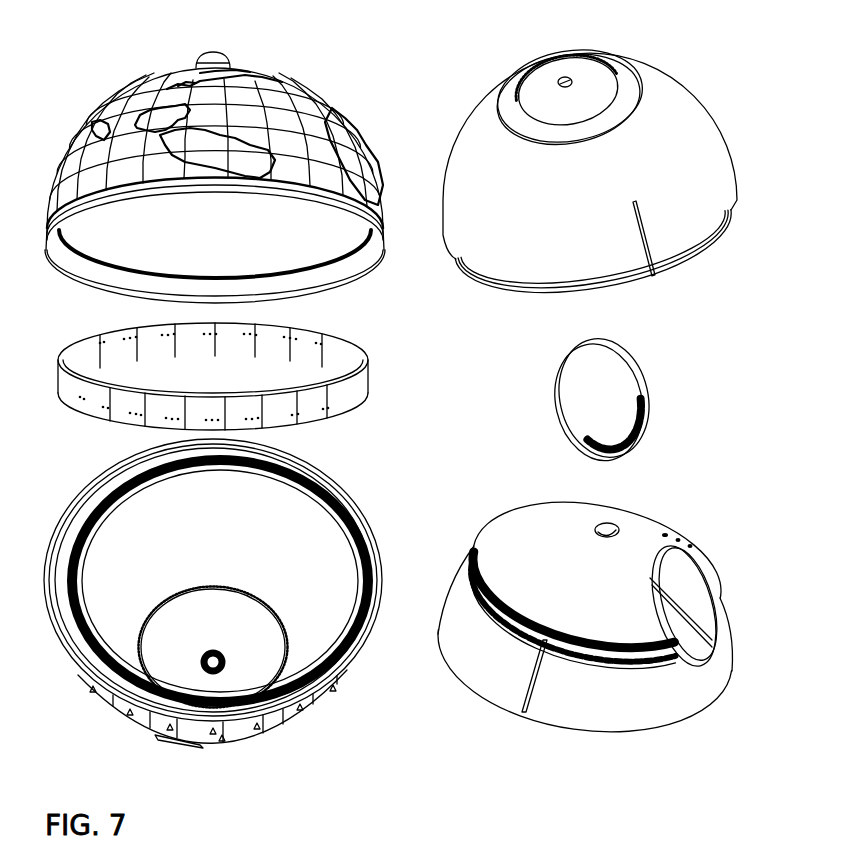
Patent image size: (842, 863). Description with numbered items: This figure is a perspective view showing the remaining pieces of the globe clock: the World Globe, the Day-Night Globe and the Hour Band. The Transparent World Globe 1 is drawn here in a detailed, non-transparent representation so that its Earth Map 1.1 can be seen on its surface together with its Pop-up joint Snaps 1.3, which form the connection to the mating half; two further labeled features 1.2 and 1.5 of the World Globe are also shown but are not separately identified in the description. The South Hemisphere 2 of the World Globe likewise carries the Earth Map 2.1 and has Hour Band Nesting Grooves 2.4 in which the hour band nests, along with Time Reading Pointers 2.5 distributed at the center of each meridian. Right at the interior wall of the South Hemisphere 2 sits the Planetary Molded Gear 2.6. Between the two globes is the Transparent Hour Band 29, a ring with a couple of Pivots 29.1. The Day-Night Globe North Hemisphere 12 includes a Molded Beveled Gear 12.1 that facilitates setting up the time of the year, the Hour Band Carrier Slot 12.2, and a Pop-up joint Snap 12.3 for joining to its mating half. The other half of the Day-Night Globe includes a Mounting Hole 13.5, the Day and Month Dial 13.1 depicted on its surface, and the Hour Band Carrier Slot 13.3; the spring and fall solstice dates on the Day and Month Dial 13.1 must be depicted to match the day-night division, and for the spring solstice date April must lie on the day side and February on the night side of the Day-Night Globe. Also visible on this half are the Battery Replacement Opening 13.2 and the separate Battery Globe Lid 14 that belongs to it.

The Transparent World Globe 1 is at (110, 107).
The Earth Map 1.1 is at (155, 107).
The pole knob 1.2 is at (224, 56).
The Pop-up joint Snaps 1.3 is at (85, 287).
The rim flange 1.5 is at (356, 270).
The Transparent Hour Band 29 is at (57, 370).
The Pivots 29.1 is at (300, 348).
The South Hemisphere 2 is at (260, 743).
The Earth Map 2.1 is at (217, 657).
The Hour Band Nesting Grooves 2.4 is at (82, 502).
The Time Reading Pointers 2.5 is at (92, 692).
The Planetary Molded Gear 2.6 is at (208, 590).
The Day-Night Globe North Hemisphere 12 is at (683, 82).
The Molded Beveled Gear 12.1 is at (623, 75).
The Hour Band Carrier Slot 12.2 is at (647, 240).
The Pop-up joint Snap 12.3 is at (502, 282).
The Mounting Hole 13.5 is at (570, 80).
The Battery Globe Lid 14 is at (615, 392).
The Day and Month Dial 13.1 is at (475, 567).
The Battery Replacement Opening 13.2 is at (705, 587).
The Hour Band Carrier Slot 13.3 is at (543, 647).